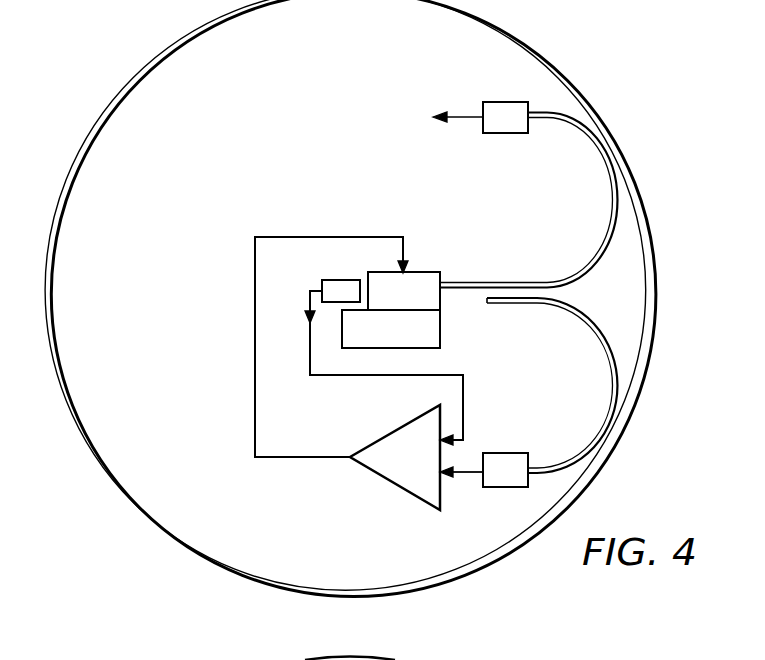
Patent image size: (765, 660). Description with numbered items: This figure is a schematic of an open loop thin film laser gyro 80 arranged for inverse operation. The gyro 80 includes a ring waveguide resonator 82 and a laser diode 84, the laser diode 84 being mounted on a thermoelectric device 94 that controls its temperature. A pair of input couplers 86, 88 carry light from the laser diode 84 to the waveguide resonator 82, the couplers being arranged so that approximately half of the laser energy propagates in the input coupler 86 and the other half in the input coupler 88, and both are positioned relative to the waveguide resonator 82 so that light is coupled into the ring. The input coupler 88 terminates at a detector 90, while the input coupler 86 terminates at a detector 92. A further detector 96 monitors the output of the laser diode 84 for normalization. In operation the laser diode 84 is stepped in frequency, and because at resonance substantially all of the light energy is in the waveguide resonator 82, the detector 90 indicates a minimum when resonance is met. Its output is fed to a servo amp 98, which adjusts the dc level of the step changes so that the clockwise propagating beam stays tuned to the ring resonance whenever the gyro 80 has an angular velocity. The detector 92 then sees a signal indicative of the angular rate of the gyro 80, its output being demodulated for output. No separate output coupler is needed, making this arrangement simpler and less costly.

The open loop thin film laser gyro 80 is at (129, 73).
The ring waveguide resonator 82 is at (584, 99).
The laser diode 84 is at (419, 271).
The input coupler 86 is at (591, 252).
The input coupler 88 is at (590, 332).
The detector 90 is at (518, 489).
The detector 92 is at (497, 101).
The thermoelectric device 94 is at (441, 334).
The detector 96 is at (337, 279).
The servo amp 98 is at (404, 491).